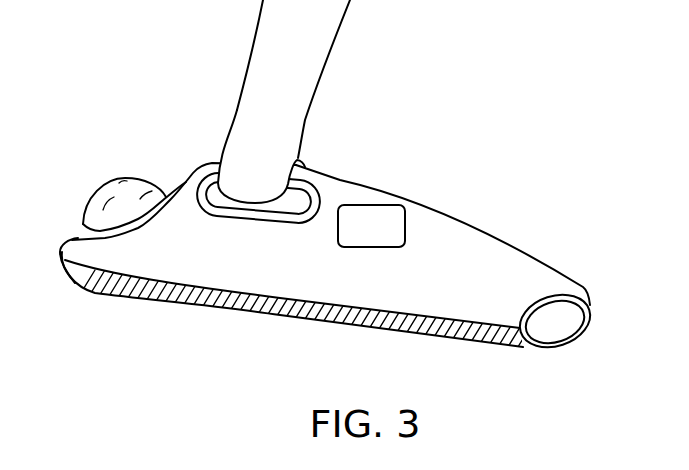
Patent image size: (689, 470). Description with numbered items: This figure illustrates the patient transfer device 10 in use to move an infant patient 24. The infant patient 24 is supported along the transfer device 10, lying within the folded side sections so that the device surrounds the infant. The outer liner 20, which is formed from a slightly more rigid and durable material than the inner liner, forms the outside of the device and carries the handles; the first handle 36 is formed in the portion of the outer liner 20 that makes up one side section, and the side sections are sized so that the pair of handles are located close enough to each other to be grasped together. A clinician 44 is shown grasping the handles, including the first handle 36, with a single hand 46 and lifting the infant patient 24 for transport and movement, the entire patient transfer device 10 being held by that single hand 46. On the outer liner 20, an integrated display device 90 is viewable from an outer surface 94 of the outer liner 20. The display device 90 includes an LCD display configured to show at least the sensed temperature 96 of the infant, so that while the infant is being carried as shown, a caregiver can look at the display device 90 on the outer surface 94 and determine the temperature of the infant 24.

The patient transfer device 10 is at (335, 157).
The outer liner 20 is at (570, 278).
The infant patient 24 is at (102, 177).
The first handle 36 is at (318, 224).
The clinician 44 is at (342, 36).
The single hand 46 is at (232, 163).
The display device 90 is at (405, 200).
The outer surface 94 is at (490, 255).
The sensed temperature 96 is at (400, 237).